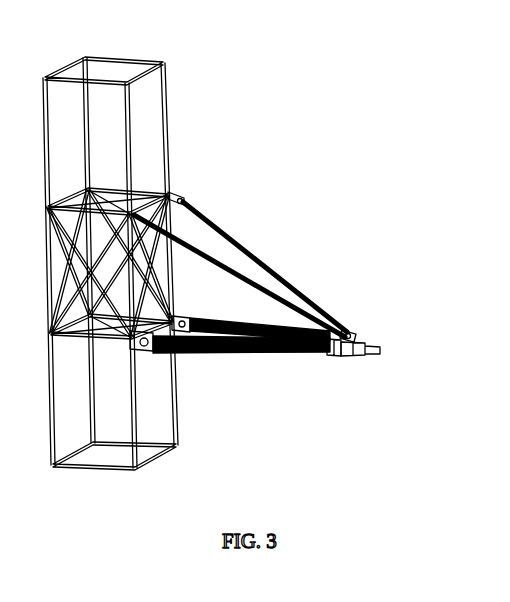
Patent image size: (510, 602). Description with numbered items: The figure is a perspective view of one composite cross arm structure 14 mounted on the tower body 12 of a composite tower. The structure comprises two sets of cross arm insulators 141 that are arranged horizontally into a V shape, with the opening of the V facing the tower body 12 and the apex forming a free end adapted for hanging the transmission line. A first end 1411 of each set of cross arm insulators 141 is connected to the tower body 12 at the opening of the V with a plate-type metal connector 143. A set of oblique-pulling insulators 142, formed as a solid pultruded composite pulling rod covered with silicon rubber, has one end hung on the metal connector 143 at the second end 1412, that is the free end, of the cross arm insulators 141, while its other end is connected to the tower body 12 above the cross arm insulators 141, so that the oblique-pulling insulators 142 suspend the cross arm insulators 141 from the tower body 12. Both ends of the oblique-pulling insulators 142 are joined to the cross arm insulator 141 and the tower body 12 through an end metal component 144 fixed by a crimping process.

The tower body 12 is at (150, 93).
The composite cross arm structure 14 is at (284, 308).
The cross arm insulators 141 is at (212, 318).
The first end 1411 is at (143, 347).
The second end 1412 is at (330, 350).
The oblique-pulling insulators 142 is at (212, 253).
The plate-type metal connector 143 is at (363, 357).
The end metal component 144 is at (188, 200).